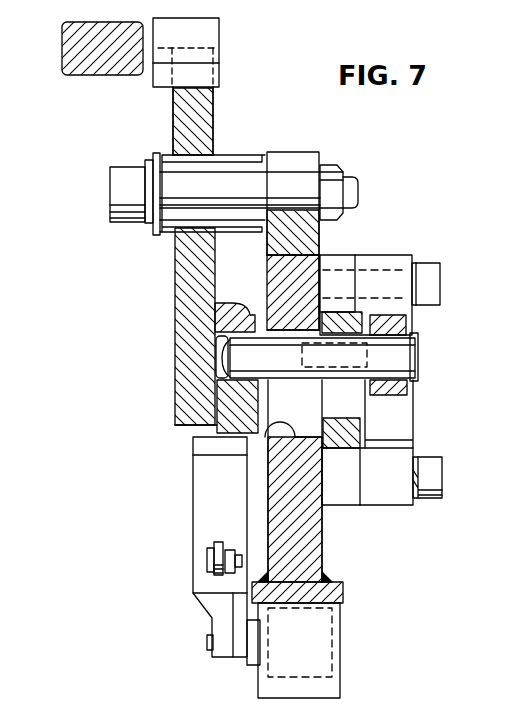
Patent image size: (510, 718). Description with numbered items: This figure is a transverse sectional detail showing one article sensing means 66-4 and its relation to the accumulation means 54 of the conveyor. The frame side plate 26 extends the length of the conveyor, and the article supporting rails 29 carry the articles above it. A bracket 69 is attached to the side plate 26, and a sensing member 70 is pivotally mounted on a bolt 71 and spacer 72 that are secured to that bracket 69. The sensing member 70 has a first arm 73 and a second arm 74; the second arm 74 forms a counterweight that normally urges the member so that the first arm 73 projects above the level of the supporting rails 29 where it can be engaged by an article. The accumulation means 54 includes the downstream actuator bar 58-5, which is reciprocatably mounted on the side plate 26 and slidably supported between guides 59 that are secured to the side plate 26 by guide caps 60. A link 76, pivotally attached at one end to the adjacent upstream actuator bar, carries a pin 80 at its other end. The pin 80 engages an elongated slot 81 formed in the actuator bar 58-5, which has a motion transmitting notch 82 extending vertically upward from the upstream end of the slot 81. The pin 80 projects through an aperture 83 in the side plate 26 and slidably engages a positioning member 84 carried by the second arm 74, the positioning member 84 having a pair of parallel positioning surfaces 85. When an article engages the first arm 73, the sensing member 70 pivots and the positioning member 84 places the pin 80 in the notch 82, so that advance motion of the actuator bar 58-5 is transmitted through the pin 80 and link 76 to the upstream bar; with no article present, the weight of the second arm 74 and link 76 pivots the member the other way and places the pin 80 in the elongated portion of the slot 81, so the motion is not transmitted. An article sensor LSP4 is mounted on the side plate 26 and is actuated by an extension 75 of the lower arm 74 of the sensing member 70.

The supporting rails 29 is at (62, 50).
The article sensing means 66-4 is at (222, 29).
The first arm 73 is at (173, 108).
The spacer 72 is at (170, 157).
The bolt 71 is at (110, 192).
The bracket 69 is at (322, 235).
The guides 59 is at (342, 258).
The sensing member 70 is at (175, 272).
The positioning member 84 is at (215, 305).
The motion transmitting notch 82 is at (345, 352).
The pin 80 is at (418, 358).
The positioning surfaces 85 is at (216, 357).
The link 76 is at (408, 391).
The second arm 74 is at (175, 392).
The elongated slot 81 is at (352, 421).
The actuator bar 58-5 is at (368, 437).
The aperture 83 is at (265, 432).
The accumulation means 54 is at (337, 506).
The guide caps 60 is at (390, 507).
The extension 75 is at (193, 537).
The side plate 26 is at (323, 555).
The article sensor LSP4 is at (340, 647).